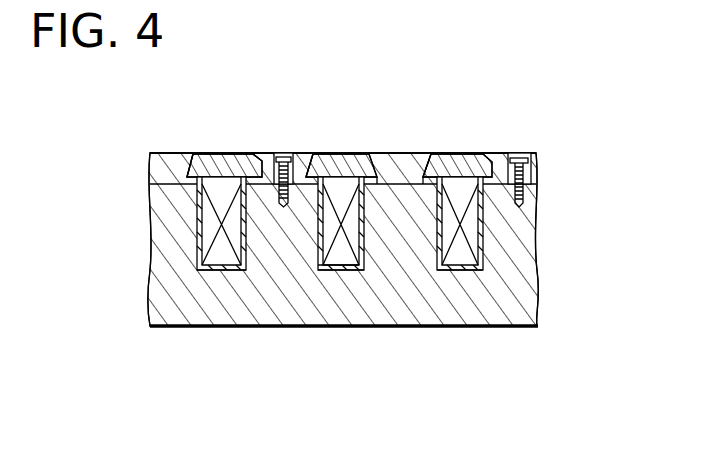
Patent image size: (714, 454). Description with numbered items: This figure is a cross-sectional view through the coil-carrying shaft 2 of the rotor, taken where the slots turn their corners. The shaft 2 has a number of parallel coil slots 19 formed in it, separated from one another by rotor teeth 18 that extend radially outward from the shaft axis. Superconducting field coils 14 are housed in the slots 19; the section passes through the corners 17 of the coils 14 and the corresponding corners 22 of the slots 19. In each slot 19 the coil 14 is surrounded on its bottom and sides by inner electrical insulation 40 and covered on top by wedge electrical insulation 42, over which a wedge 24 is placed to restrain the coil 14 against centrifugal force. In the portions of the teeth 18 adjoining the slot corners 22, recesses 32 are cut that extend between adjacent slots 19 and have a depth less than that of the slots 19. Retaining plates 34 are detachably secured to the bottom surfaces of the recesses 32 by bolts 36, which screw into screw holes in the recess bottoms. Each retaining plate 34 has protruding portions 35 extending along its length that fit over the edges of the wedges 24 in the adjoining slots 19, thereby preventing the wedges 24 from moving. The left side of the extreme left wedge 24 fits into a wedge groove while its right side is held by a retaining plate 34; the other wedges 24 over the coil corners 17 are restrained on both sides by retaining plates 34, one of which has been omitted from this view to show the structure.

The coil-carrying shaft 2 is at (474, 310).
The superconducting field coil 14 is at (222, 255).
The corner 17 is at (163, 153).
The rotor tooth 18 is at (287, 205).
The coil slot 19 is at (196, 282).
The corner 22 is at (305, 235).
The wedge 24 is at (222, 153).
The recess 32 is at (397, 185).
The retaining plate 34 is at (272, 156).
The protruding portion 35 is at (251, 153).
The bolt 36 is at (285, 155).
The inner electrical insulation 40 is at (248, 272).
The wedge electrical insulation 42 is at (193, 158).